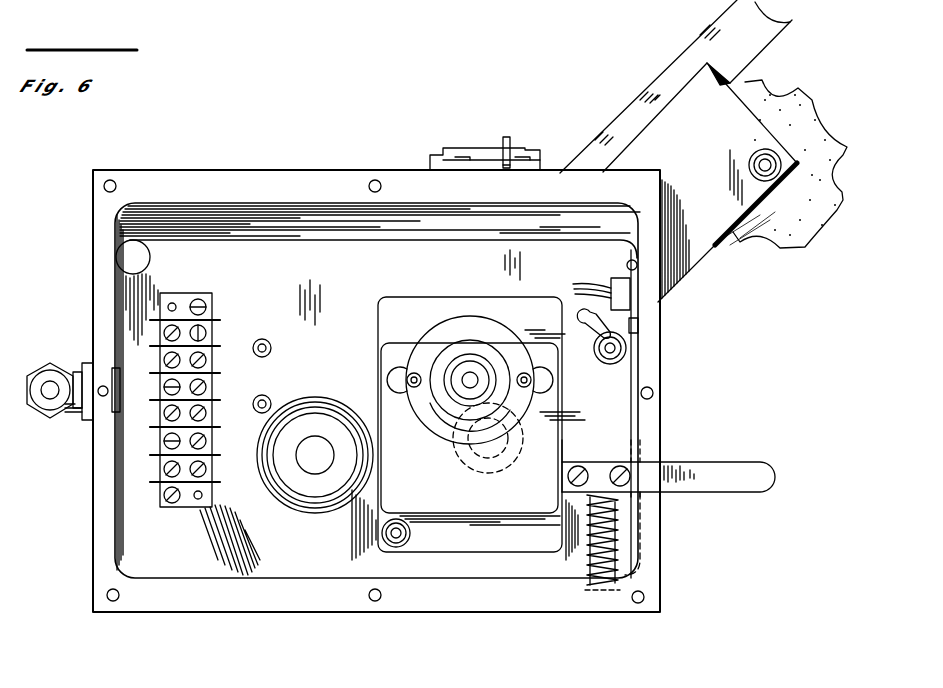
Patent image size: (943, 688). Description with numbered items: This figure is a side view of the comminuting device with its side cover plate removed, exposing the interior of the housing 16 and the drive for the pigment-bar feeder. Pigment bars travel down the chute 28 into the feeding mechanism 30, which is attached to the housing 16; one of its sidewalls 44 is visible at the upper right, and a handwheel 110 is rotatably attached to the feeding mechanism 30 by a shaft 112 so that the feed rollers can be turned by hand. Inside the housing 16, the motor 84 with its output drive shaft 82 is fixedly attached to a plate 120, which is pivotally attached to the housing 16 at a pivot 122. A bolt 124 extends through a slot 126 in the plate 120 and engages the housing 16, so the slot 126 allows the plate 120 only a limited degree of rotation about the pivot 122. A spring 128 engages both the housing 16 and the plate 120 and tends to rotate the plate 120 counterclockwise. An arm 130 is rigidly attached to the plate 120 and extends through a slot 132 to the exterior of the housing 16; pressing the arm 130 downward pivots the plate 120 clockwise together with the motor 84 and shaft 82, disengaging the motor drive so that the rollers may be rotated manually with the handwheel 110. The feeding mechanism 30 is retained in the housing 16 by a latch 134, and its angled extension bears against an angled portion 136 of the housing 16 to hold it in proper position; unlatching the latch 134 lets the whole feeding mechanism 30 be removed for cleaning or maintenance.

The housing 16 is at (513, 603).
The chute 28 is at (673, 70).
The feeding mechanism 30 is at (690, 286).
The sidewall 44 is at (697, 253).
The drive shaft 82 is at (474, 380).
The motor 84 is at (452, 318).
The handwheel 110 is at (812, 102).
The shaft 112 is at (767, 167).
The plate 120 is at (388, 300).
The pivot 122 is at (387, 547).
The bolt 124 is at (622, 355).
The slot 126 is at (614, 326).
The spring 128 is at (617, 562).
The arm 130 is at (753, 483).
The slot 132 is at (645, 548).
The latch 134 is at (510, 135).
The angled portion 136 is at (317, 467).